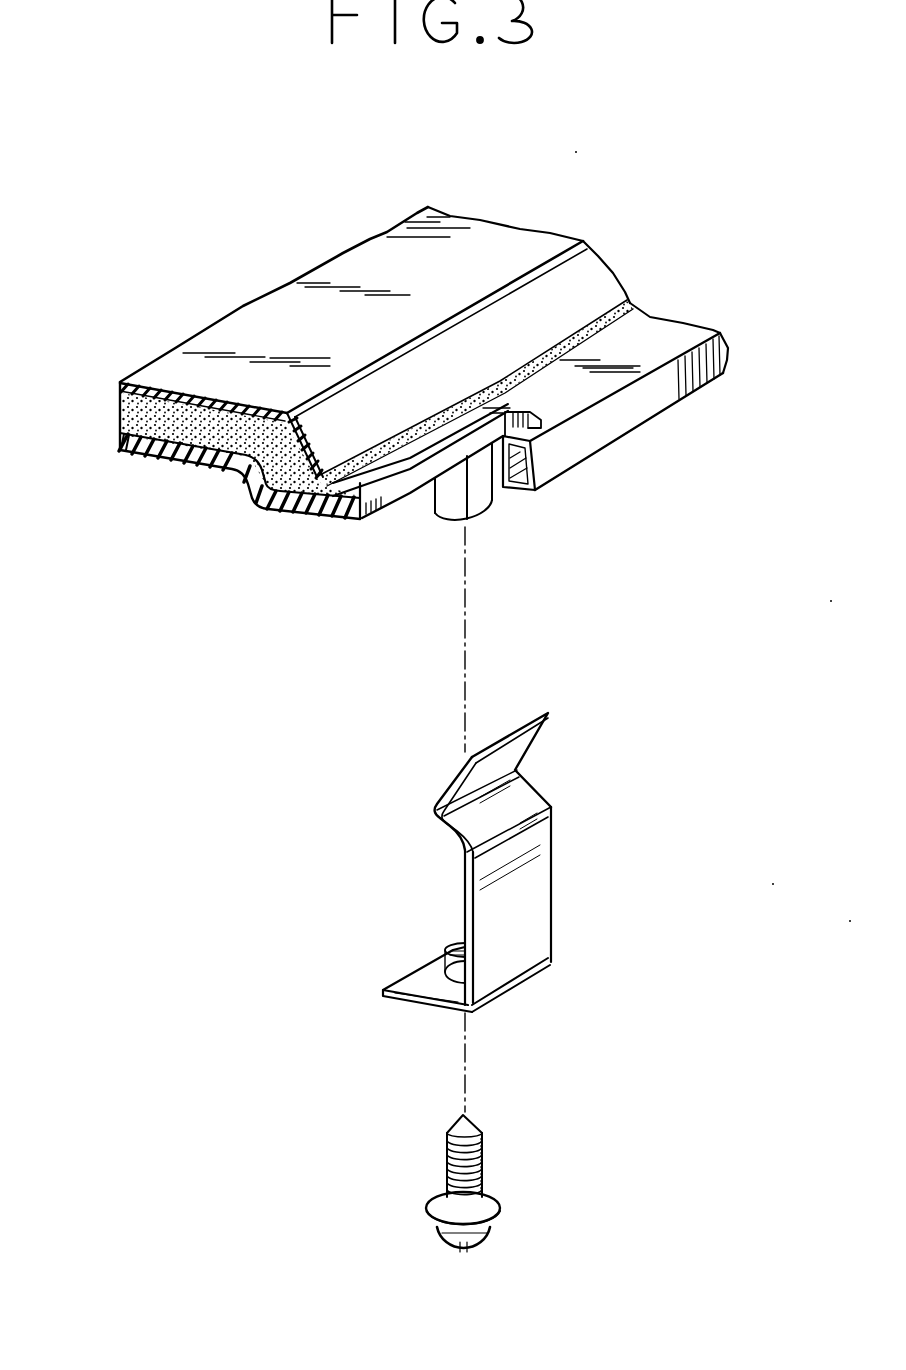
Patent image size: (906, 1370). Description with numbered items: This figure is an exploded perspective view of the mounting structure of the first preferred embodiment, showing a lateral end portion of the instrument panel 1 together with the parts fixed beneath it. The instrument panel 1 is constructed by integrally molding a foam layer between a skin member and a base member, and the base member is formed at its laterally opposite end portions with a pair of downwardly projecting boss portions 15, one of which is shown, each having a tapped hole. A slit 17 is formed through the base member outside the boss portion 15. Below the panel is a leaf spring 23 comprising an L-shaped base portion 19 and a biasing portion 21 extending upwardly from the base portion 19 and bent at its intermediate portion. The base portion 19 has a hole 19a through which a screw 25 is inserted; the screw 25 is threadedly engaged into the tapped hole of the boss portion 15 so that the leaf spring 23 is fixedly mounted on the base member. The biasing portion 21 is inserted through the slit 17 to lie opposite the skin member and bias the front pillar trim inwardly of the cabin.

The instrument panel 1 is at (284, 279).
The boss portion 15 is at (443, 503).
The slit 17 is at (527, 417).
The base portion 19 is at (515, 968).
The hole 19a is at (452, 956).
The biasing portion 21 is at (523, 750).
The leaf spring 23 is at (497, 877).
The screw 25 is at (482, 1155).